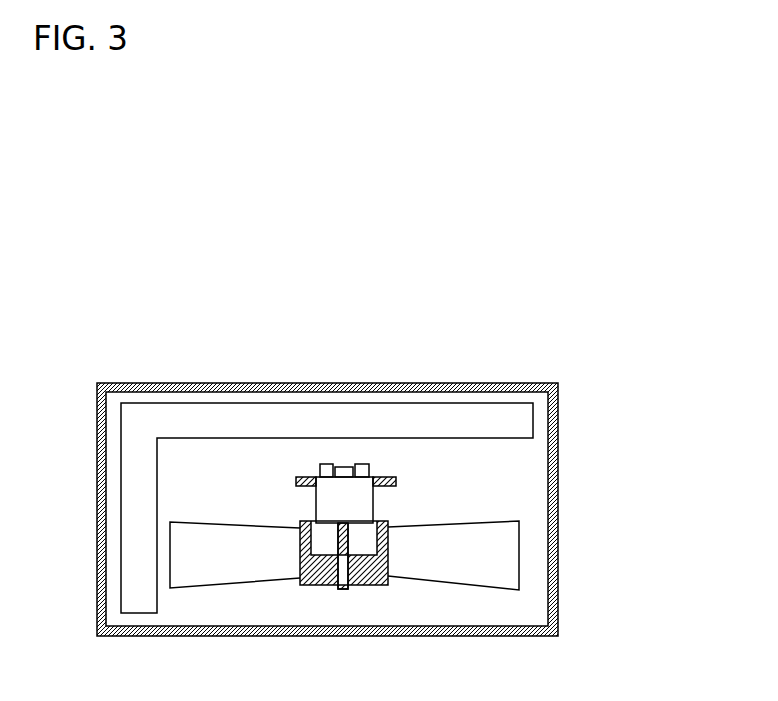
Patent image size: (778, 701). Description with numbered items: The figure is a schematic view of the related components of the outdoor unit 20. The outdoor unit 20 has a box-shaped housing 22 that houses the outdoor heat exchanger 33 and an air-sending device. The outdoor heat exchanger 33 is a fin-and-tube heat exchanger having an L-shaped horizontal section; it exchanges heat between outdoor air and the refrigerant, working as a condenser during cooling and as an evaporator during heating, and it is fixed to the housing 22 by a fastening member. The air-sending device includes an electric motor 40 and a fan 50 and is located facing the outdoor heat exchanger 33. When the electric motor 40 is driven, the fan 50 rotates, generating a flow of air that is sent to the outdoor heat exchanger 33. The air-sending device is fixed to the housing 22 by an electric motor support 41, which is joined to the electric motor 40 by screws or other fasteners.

The outdoor unit 20 is at (683, 258).
The housing 22 is at (163, 383).
The outdoor heat exchanger 33 is at (230, 383).
The electric motor 40 is at (356, 507).
The electric motor support 41 is at (384, 477).
The fan 50 is at (493, 555).